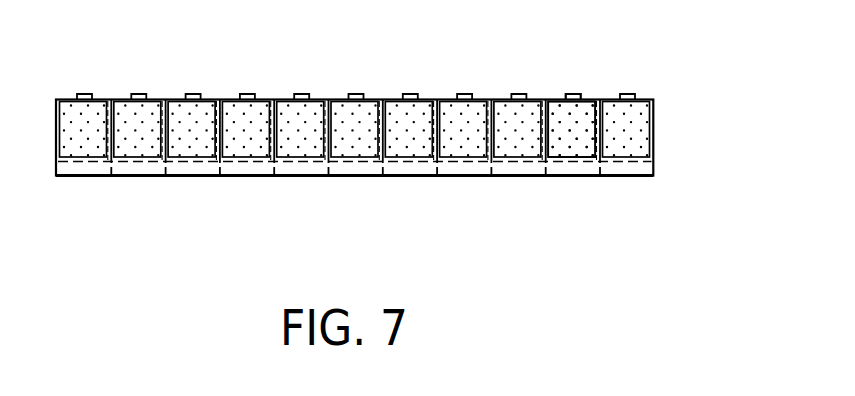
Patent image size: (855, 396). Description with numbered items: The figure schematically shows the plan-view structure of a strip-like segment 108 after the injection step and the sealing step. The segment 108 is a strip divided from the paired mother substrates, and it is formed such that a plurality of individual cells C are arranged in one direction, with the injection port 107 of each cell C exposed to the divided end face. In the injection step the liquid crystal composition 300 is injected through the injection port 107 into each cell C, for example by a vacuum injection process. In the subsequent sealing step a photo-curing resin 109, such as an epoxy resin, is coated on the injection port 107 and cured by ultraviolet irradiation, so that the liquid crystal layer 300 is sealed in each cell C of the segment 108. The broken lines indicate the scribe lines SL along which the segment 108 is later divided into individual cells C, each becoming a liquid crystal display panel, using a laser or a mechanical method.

The segment 108 is at (655, 142).
The photo-curing resin 109 is at (250, 94).
The cell C is at (127, 162).
The scribe line SL is at (272, 164).
The liquid crystal layer 300 is at (463, 147).
The injection port 107 is at (567, 104).